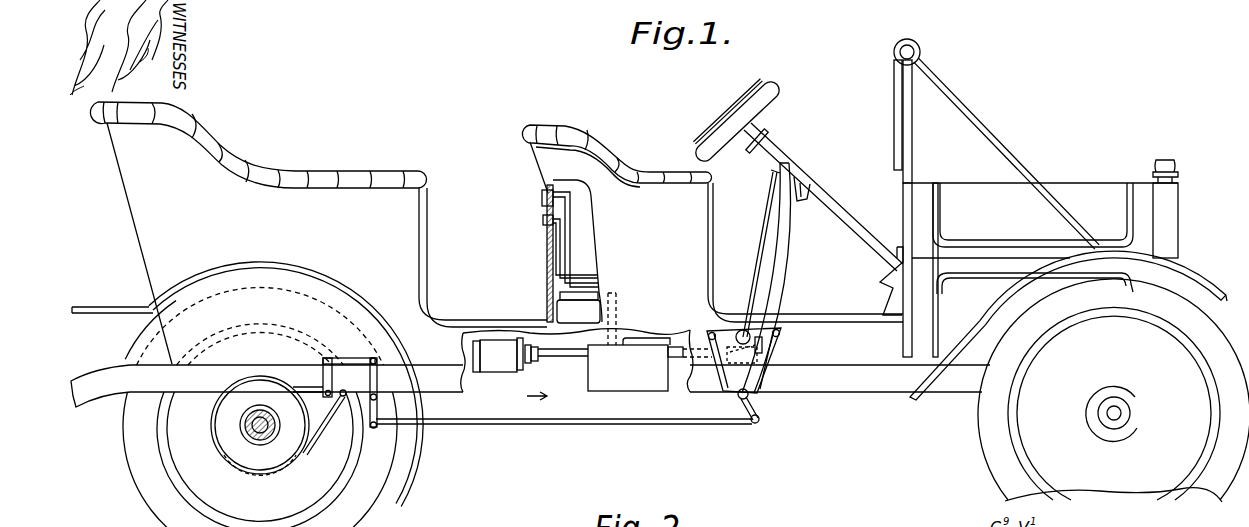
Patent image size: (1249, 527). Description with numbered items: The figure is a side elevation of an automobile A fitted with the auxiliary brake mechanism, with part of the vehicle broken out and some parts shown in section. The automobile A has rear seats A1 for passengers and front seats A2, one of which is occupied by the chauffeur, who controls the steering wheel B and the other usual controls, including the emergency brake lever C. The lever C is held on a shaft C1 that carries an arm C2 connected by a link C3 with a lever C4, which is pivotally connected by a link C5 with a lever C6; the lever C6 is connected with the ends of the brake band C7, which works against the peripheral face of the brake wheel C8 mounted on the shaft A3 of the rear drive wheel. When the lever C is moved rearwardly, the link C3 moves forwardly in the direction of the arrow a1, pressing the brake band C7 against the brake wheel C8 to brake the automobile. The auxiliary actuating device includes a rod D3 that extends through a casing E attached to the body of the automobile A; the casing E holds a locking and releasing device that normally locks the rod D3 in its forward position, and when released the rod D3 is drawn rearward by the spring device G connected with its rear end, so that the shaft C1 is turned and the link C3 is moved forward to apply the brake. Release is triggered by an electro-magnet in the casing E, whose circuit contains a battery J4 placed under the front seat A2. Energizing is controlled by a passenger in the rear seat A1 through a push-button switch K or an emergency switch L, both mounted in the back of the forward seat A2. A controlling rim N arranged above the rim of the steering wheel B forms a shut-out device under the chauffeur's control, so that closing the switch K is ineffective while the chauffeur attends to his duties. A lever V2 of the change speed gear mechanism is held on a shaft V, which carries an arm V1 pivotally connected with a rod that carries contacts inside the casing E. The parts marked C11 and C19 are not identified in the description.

The automobile A is at (649, 273).
The rear seats A1 is at (327, 172).
The front seats A2 is at (650, 172).
The shaft of the rear or drive wheel A3 is at (245, 427).
The steering wheel B is at (775, 97).
The controlling rim N is at (742, 104).
The emergency switch L is at (541, 198).
The push-button switch K is at (543, 221).
The battery J4 is at (588, 307).
The shaft C1 is at (497, 345).
The spring device G is at (487, 373).
The arrow a1 is at (530, 387).
The rod D3 is at (553, 359).
The casing E is at (650, 385).
The emergency brake lever C is at (787, 268).
The lever of the change speed gear mechanism V2 is at (757, 263).
The shaft V is at (740, 333).
The cam block C19 is at (764, 357).
The lever pivot crank C11 is at (750, 396).
The arm C2 is at (752, 422).
The link C3 is at (547, 426).
The link C5 is at (355, 359).
The lever C4 is at (378, 414).
The lever C6 is at (324, 385).
The brake band C7 is at (323, 430).
The brake wheel C8 is at (272, 460).
The arm V1 is at (1113, 390).